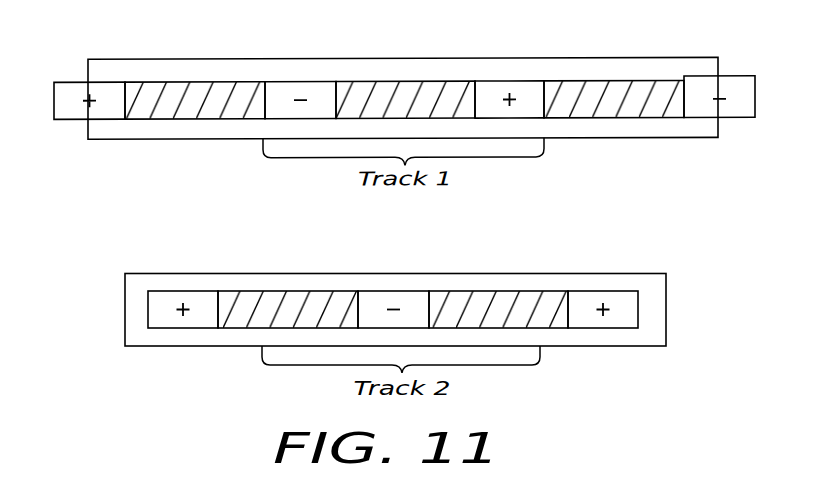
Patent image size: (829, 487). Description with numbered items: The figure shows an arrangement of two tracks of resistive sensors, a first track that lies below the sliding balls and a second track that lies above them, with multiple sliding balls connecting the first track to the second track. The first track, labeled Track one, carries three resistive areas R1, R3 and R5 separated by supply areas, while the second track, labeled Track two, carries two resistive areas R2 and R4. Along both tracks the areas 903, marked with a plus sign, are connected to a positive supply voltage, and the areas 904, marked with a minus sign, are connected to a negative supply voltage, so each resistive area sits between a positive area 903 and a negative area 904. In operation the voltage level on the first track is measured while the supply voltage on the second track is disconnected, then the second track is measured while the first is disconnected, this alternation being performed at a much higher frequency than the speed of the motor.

The areas connected to a positive supply voltage 903 is at (68, 91).
The areas connected to a negative supply voltage 904 is at (291, 92).
The resistive area R1 is at (197, 114).
The resistive area R2 is at (292, 303).
The resistive area R3 is at (407, 92).
The resistive area R4 is at (500, 302).
The resistive area R5 is at (618, 107).